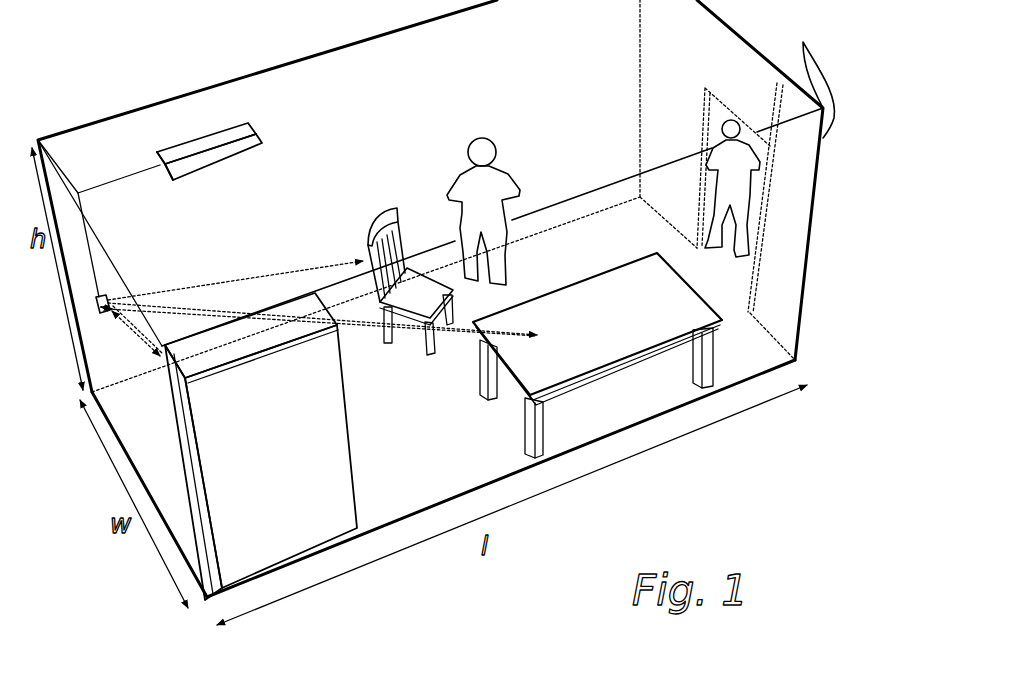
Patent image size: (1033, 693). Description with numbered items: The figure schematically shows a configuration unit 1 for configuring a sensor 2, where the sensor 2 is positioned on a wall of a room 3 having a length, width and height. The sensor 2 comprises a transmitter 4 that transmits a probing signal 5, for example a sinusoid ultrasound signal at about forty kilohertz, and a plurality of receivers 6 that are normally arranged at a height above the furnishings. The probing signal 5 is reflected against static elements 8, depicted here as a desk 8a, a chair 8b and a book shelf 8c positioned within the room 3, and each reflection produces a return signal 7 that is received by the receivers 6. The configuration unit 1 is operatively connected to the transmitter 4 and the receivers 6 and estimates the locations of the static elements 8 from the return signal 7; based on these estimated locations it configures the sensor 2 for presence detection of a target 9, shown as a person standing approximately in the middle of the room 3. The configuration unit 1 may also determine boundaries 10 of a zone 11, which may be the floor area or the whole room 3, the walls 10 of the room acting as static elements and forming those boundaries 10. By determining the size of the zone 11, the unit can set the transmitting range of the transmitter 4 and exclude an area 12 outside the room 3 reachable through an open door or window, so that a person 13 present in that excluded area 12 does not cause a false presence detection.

The configuration unit 1 is at (213, 150).
The sensor 2 is at (95, 298).
The room 3 is at (745, 338).
The transmitter 4 is at (97, 309).
The probing signal 5 is at (287, 267).
The plurality of receivers 6 is at (97, 309).
The return signal 7 is at (170, 293).
The static element 8 is at (471, 404).
The desk 8a is at (590, 362).
The chair 8b is at (372, 218).
The book shelf 8c is at (330, 413).
The target 9 is at (473, 182).
The boundaries 10 is at (816, 75).
The zone 11 is at (473, 447).
The area outside the room 12 is at (735, 272).
The person 13 is at (730, 133).